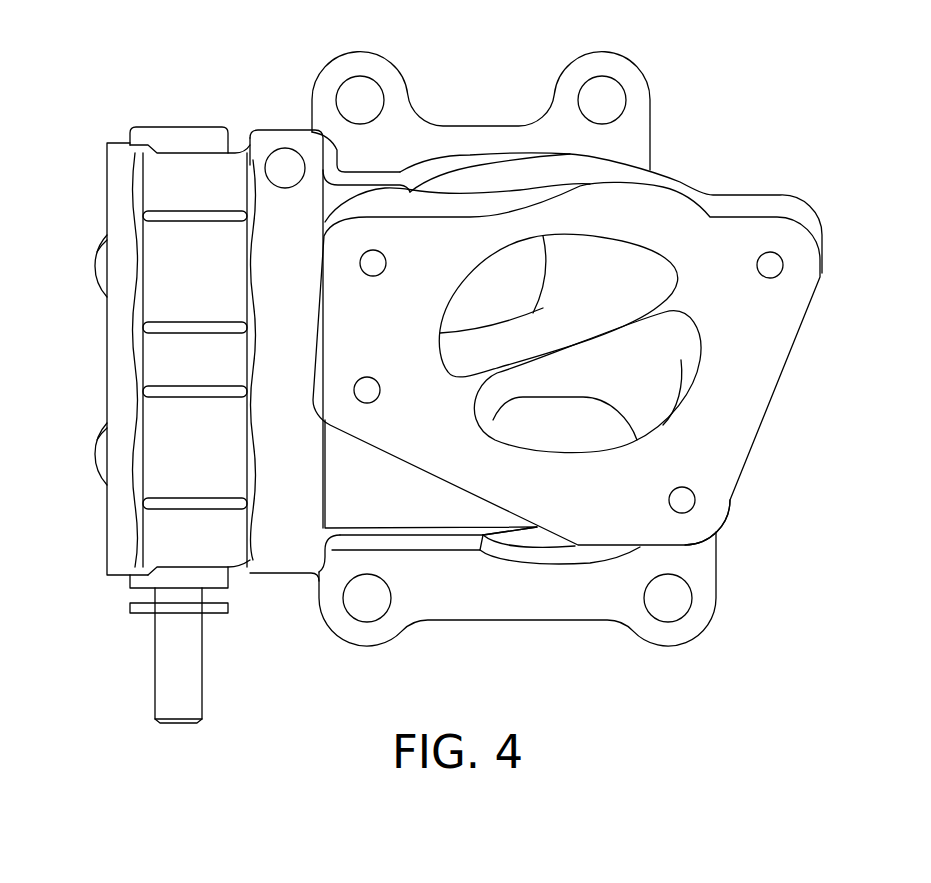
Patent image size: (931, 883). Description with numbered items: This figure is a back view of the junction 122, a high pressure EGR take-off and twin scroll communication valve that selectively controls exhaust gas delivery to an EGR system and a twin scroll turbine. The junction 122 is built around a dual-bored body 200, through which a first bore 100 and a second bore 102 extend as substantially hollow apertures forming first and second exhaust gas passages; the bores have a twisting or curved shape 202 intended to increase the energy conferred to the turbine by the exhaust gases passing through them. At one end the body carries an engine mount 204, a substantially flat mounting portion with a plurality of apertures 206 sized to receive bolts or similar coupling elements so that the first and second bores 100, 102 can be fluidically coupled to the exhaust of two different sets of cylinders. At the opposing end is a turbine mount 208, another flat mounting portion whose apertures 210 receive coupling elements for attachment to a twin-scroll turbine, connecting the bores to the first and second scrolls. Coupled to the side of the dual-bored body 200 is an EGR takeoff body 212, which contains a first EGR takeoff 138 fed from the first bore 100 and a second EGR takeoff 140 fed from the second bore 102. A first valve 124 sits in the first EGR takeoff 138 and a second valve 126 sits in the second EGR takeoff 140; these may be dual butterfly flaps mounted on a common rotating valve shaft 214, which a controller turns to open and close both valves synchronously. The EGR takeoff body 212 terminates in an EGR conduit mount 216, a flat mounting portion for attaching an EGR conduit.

The first bore 100 is at (567, 345).
The second bore 102 is at (650, 375).
The junction 122 is at (501, 381).
The first valve 124 is at (105, 282).
The second valve 126 is at (105, 468).
The first EGR takeoff 138 is at (82, 263).
The second EGR takeoff 140 is at (82, 455).
The dual-bored body 200 is at (390, 498).
The twisting or curved shape of the bores 202 is at (497, 375).
The engine mount 204 is at (513, 622).
The apertures 206 is at (360, 97).
The turbine mount 208 is at (733, 513).
The apertures 210 is at (385, 272).
The EGR takeoff body 212 is at (157, 425).
The valve shaft 214 is at (203, 662).
The EGR conduit mount 216 is at (152, 377).